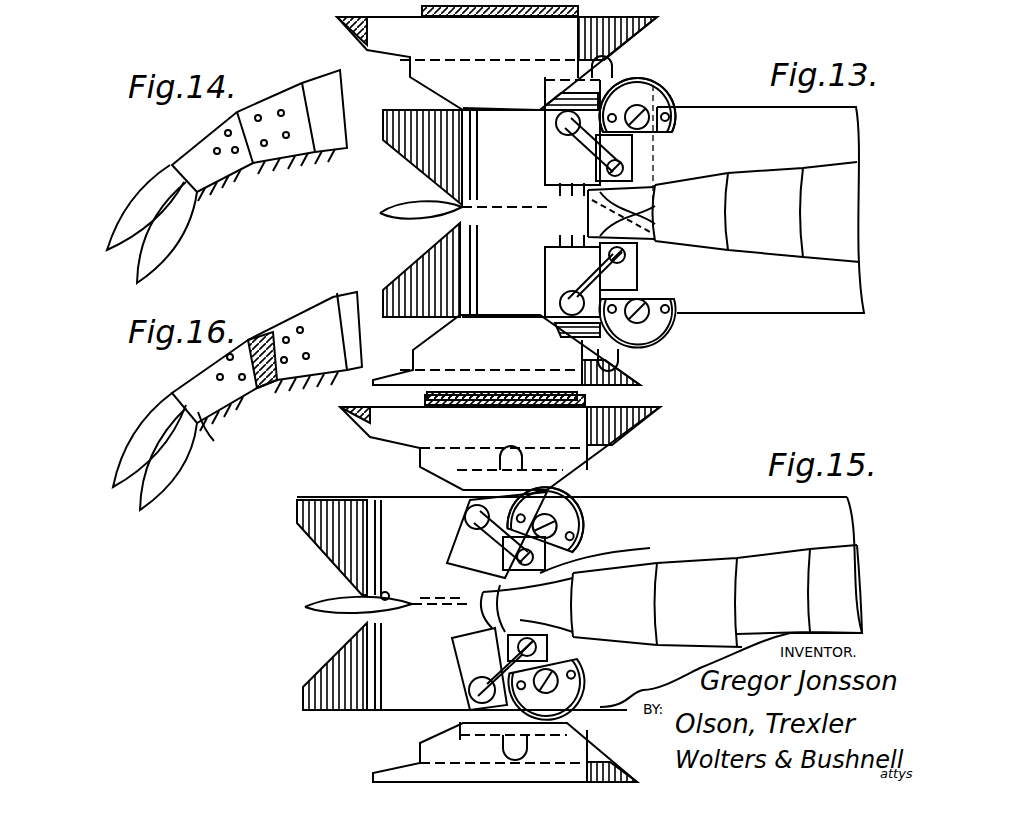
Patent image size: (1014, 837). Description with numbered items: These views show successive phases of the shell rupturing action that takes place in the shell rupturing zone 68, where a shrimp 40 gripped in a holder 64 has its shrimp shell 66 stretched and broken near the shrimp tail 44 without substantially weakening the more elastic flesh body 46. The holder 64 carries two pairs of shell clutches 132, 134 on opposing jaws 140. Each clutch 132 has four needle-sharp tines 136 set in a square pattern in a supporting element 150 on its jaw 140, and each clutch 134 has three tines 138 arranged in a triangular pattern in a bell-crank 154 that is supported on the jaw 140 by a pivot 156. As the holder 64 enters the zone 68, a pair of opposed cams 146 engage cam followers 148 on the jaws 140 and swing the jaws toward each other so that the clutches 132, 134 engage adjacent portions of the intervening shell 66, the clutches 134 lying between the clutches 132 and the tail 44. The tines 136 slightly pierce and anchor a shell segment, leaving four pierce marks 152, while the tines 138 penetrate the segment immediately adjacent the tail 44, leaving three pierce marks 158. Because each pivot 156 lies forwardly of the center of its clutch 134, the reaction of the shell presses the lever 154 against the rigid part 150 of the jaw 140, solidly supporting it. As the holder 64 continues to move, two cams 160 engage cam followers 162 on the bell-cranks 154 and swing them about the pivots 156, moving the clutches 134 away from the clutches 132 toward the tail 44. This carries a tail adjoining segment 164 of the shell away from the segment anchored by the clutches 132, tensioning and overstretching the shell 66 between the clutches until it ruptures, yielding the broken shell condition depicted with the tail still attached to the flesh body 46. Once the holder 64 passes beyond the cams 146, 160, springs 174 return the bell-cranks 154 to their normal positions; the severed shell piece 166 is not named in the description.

In FIG. 13, the shrimp 40 is at (762, 257).
In FIG. 15, the shrimp 40 is at (759, 556).
In FIG. 14, the shrimp tail 44 is at (184, 180).
In FIG. 16, the shrimp tail 44 is at (175, 485).
In FIG. 13, the shrimp tail 44 is at (396, 214).
In FIG. 15, the shrimp tail 44 is at (330, 606).
In FIG. 16, the flesh body 46 is at (257, 337).
In FIG. 13, the holder 64 is at (838, 327).
In FIG. 15, the holder 64 is at (730, 486).
In FIG. 14, the shrimp shell 66 is at (322, 82).
In FIG. 13, the shrimp shell 66 is at (772, 173).
In FIG. 13, the shell rupturing zone 68 is at (690, 79).
In FIG. 15, the shell rupturing zone 68 is at (651, 468).
In FIG. 13, the shell clutch 132 is at (656, 186).
In FIG. 15, the shell clutch 132 is at (560, 575).
In FIG. 13, the shell clutch 134 is at (548, 193).
In FIG. 15, the shell clutch 134 is at (472, 583).
In FIG. 13, the tine 136 is at (658, 201).
In FIG. 15, the tine 136 is at (540, 618).
In FIG. 15, the tine 138 is at (490, 601).
In FIG. 13, the jaw 140 is at (620, 72).
In FIG. 15, the jaw 140 is at (525, 599).
In FIG. 13, the cam 146 is at (615, 45).
In FIG. 15, the cam 146 is at (645, 418).
In FIG. 13, the cam follower 148 is at (620, 70).
In FIG. 15, the cam follower 148 is at (623, 594).
In FIG. 13, the supporting element 150 is at (627, 170).
In FIG. 14, the pierce mark 152 is at (281, 111).
In FIG. 13, the bell-crank 154 is at (560, 158).
In FIG. 15, the bell-crank 154 is at (460, 545).
In FIG. 13, the pivot 156 is at (566, 125).
In FIG. 15, the pivot 156 is at (473, 515).
In FIG. 14, the pierce mark 158 is at (214, 151).
In FIG. 16, the pierce mark 158 is at (217, 377).
In FIG. 13, the cam 160 is at (517, 112).
In FIG. 15, the cam 160 is at (590, 487).
In FIG. 13, the cam follower 162 is at (678, 104).
In FIG. 15, the cam follower 162 is at (585, 523).
In FIG. 16, the tail adjoining segment 164 is at (206, 423).
In FIG. 15, the tail adjoining segment 164 is at (470, 622).
In FIG. 16, the severed shell section 166 is at (322, 302).
In FIG. 13, the spring 174 is at (633, 163).
In FIG. 15, the spring 174 is at (480, 553).